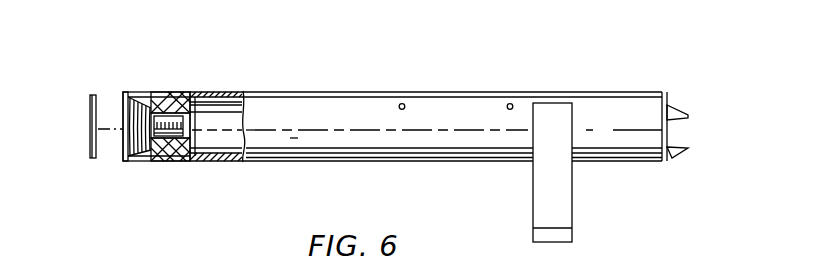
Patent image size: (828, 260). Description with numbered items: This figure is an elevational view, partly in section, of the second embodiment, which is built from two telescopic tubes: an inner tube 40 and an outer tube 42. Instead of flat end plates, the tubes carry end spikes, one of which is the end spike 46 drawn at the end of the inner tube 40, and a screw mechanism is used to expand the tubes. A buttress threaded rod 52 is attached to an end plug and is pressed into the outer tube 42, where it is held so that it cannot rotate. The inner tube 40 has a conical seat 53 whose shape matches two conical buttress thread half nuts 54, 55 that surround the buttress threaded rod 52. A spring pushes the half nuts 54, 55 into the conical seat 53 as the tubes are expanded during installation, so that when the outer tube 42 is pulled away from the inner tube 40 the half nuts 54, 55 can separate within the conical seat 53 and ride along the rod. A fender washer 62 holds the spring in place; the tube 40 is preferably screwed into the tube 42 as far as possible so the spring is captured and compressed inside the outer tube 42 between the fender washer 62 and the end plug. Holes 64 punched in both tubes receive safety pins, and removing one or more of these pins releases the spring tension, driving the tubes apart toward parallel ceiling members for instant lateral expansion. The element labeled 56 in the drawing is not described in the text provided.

The inner tube 40 is at (620, 110).
The outer tube 42 is at (597, 181).
The end spike 46 is at (680, 151).
The buttress threaded rod 52 is at (163, 98).
The conical seat 53 is at (178, 153).
The buttress thread half nut 54 is at (178, 96).
The buttress thread half nut 55 is at (163, 161).
The threaded bore 56 is at (133, 95).
The fender washer 62 is at (93, 160).
The holes 64 is at (403, 103).